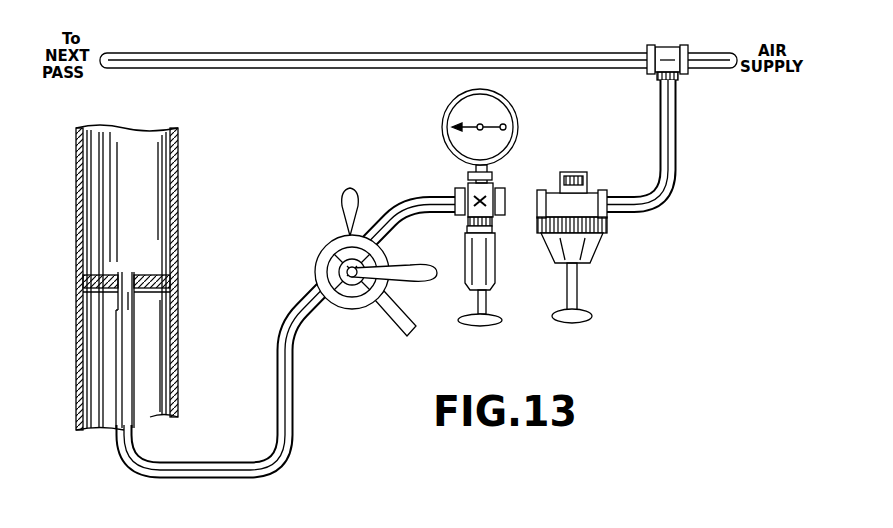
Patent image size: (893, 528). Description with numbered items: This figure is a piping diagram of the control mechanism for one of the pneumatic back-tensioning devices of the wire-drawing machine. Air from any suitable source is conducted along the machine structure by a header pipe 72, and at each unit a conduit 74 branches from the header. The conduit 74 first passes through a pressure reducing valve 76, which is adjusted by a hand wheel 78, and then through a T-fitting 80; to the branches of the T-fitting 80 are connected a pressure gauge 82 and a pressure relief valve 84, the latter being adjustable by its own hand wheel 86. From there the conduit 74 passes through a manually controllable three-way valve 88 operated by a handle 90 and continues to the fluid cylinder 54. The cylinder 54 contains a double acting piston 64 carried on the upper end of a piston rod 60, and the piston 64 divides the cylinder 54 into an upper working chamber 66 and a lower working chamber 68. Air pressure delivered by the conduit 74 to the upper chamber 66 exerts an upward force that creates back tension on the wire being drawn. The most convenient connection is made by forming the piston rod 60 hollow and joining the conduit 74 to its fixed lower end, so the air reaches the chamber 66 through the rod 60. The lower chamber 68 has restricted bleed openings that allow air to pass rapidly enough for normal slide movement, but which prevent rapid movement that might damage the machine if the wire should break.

The fluid cylinder 54 is at (176, 212).
The piston rod 60 is at (127, 358).
The double acting piston 64 is at (158, 264).
The upper working chamber 66 is at (156, 170).
The lower working chamber 68 is at (160, 389).
The header pipe 72 is at (605, 57).
The conduit 74 is at (672, 143).
The pressure reducing valve 76 is at (597, 248).
The hand wheel 78 is at (600, 324).
The T-fitting 80 is at (487, 193).
The pressure gauge 82 is at (515, 111).
The pressure relief valve 84 is at (483, 260).
The hand wheel 86 is at (498, 334).
The three-way valve 88 is at (352, 307).
The handle 90 is at (418, 266).